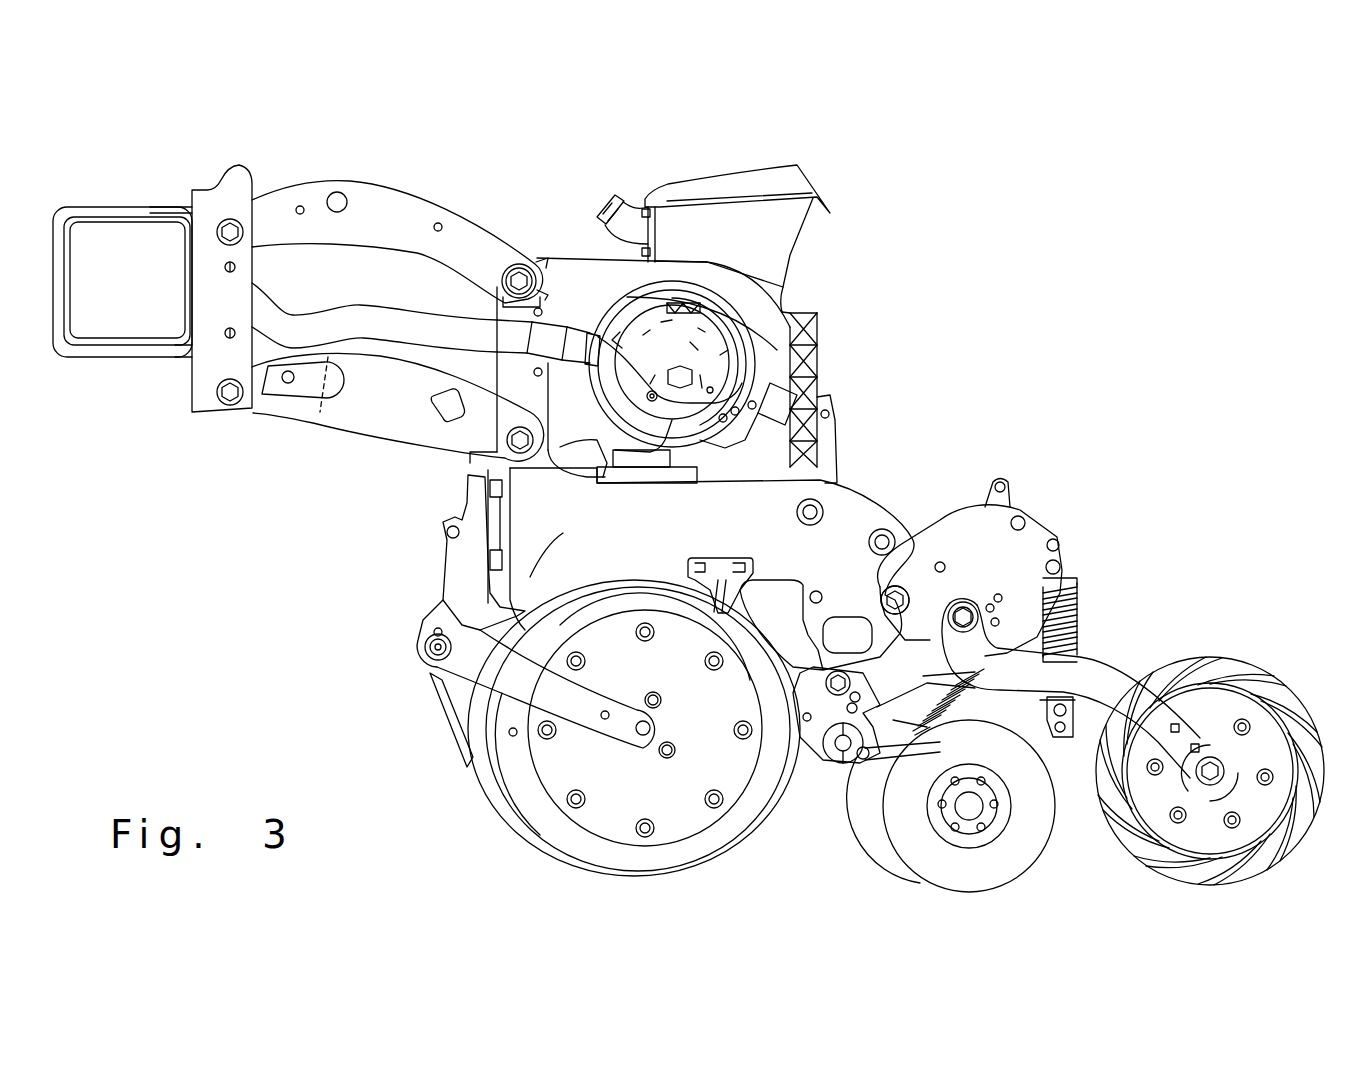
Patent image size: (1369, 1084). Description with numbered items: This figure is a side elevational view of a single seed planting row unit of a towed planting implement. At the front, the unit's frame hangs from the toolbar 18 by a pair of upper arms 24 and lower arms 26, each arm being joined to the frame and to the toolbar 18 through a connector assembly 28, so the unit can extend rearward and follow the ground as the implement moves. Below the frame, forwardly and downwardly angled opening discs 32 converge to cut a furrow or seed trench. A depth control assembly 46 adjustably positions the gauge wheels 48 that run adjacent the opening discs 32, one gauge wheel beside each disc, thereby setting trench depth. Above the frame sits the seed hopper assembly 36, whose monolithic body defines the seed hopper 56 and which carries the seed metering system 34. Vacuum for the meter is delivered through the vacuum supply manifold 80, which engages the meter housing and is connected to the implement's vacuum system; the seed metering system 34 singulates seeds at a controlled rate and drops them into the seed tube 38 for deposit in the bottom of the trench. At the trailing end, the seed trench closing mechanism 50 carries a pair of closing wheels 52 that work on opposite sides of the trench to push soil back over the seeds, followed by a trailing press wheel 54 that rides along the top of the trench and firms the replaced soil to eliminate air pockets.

The toolbar 18 is at (148, 218).
The upper arms 24 is at (382, 192).
The lower arms 26 is at (362, 413).
The connector assembly 28 is at (256, 150).
The opening discs 32 is at (512, 808).
The seed metering system 34 is at (782, 364).
The seed hopper assembly 36 is at (673, 145).
The seed tube 38 is at (508, 452).
The depth control assembly 46 is at (400, 600).
The gauge wheels 48 is at (627, 867).
The seed trench closing mechanism 50 is at (1133, 555).
The closing wheels 52 is at (870, 837).
The press wheel 54 is at (1272, 678).
The seed hopper 56 is at (787, 233).
The vacuum supply manifold 80 is at (667, 413).